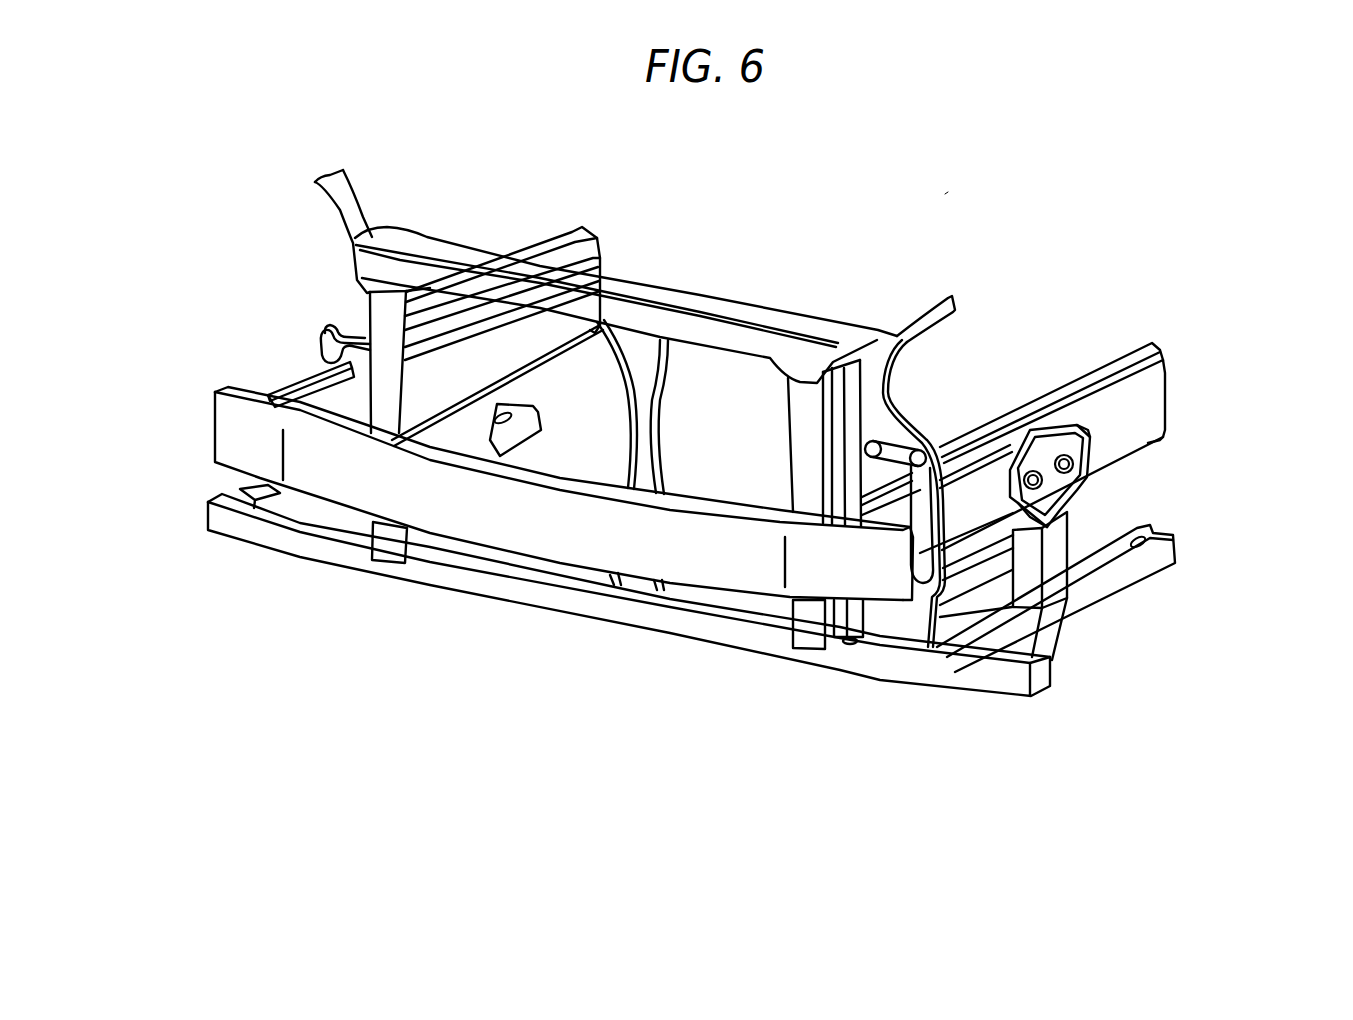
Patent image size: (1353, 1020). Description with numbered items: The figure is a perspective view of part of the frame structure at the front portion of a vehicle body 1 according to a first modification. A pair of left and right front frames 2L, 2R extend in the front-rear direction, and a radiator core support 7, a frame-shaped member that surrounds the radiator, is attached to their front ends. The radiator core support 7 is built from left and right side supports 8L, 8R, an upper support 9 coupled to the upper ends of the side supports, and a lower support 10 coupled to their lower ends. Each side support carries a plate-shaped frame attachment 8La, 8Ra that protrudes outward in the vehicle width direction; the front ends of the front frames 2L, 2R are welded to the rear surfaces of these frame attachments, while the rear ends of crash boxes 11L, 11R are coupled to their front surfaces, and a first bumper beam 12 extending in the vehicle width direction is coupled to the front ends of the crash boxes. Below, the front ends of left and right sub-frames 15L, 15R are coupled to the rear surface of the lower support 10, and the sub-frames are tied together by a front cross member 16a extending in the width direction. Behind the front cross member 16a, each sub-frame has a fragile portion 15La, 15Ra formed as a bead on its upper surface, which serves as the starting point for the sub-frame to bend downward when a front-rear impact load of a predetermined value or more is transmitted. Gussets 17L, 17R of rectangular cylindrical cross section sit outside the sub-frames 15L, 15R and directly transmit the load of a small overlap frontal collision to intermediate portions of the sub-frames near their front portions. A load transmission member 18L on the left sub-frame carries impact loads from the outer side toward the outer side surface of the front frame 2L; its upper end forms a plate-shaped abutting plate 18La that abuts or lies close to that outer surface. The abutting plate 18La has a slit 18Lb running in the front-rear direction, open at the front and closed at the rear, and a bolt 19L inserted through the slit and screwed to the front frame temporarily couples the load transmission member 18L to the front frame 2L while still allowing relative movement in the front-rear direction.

The vehicle body 1 is at (945, 194).
The right front frame 2R is at (542, 244).
The left front frame 2L is at (1096, 364).
The radiator core support 7 is at (757, 299).
The upper support 9 is at (655, 288).
The right side support 8R is at (380, 318).
The right frame attachment 8Ra is at (333, 318).
The left side support 8L is at (818, 396).
The left frame attachment 8La is at (881, 414).
The right crash box 11R is at (302, 378).
The left crash box 11L is at (857, 491).
The first bumper beam 12 is at (480, 532).
The lower support 10 is at (587, 608).
The right sub-frame 15R is at (538, 436).
The right fragile portion 15Ra is at (540, 412).
The left sub-frame 15L is at (1153, 565).
The left fragile portion 15La is at (1150, 540).
The front cross member 16a is at (995, 590).
The right gusset 17R is at (243, 488).
The left gusset 17L is at (1057, 650).
The left load transmission member 18L is at (1063, 543).
The left abutting plate 18La is at (1080, 441).
The left slit 18Lb is at (1037, 470).
The bolt 19L is at (1080, 476).